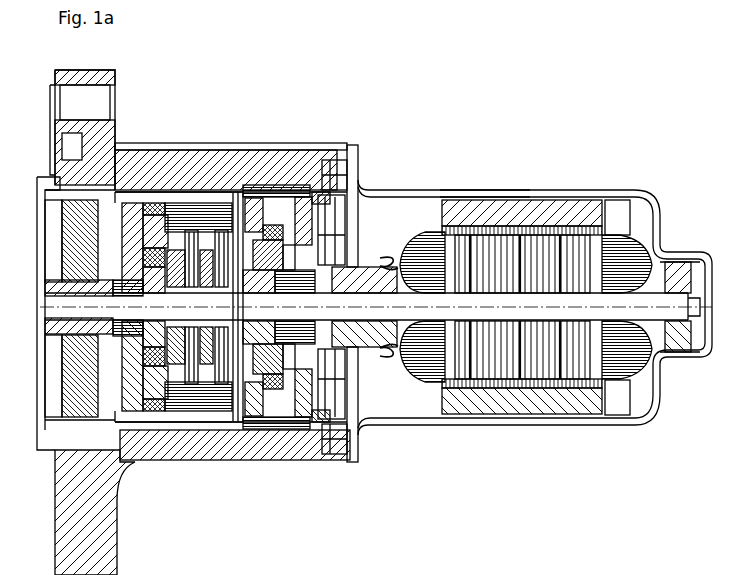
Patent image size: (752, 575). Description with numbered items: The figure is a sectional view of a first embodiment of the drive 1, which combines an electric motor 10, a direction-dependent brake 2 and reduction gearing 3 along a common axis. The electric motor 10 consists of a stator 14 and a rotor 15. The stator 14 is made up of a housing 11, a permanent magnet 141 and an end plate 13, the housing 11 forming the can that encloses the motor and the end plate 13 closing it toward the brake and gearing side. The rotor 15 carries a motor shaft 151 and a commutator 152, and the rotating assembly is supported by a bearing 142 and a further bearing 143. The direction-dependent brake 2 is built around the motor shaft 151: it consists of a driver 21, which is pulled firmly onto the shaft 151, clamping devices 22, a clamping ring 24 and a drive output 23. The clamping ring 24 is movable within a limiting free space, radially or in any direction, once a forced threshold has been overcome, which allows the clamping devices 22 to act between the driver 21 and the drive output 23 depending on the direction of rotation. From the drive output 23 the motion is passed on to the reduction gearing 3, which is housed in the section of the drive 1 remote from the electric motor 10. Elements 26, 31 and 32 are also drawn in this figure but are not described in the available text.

The drive 1 is at (547, 141).
The direction-dependent brake 2 is at (289, 430).
The reduction gearing 3 is at (203, 432).
The electric motor 10 is at (619, 221).
The housing 11 is at (527, 418).
The end plate 13 is at (305, 255).
The stator 14 is at (607, 430).
The rotor 15 is at (560, 400).
The driver 21 is at (278, 245).
The clamping devices 22 is at (300, 400).
The drive output 23 is at (268, 400).
The clamping ring 24 is at (247, 235).
The planet pin 26 is at (240, 432).
The housing cover plate 31 is at (187, 141).
The housing wall 32 is at (204, 172).
The permanent magnet 141 is at (484, 190).
The bearing 142 is at (676, 352).
The bearing 143 is at (338, 200).
The motor shaft 151 is at (490, 400).
The commutator 152 is at (366, 360).